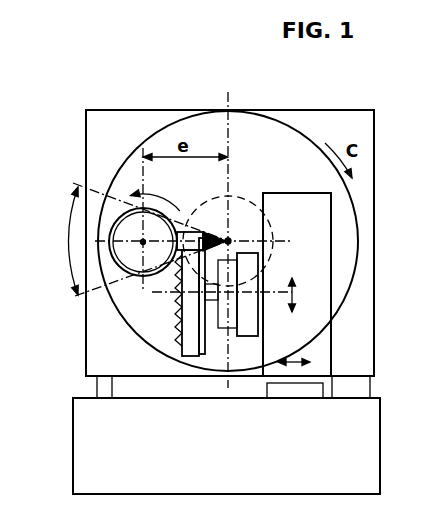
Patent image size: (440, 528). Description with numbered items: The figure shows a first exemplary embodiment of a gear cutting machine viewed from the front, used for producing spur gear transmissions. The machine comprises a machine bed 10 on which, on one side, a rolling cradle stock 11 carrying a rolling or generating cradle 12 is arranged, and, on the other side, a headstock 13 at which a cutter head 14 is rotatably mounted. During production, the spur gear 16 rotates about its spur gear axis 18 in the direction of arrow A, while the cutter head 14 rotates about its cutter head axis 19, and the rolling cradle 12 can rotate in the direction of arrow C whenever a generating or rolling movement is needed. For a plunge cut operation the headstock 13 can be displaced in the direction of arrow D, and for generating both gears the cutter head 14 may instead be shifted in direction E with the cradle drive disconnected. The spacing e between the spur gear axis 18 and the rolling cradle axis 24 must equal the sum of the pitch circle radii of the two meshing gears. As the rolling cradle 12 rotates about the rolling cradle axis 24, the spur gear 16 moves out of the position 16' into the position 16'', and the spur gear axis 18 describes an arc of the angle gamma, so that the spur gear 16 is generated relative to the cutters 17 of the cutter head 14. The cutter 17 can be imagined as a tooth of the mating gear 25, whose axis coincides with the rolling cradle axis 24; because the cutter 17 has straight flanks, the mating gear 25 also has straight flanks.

The machine bed 10 is at (78, 427).
The rolling cradle stock 11 is at (161, 110).
The rolling cradle 12 is at (205, 113).
The headstock 13 is at (291, 382).
The cutter head 14 is at (192, 357).
The spur gear 16 is at (110, 216).
The spur gear position 16' is at (133, 207).
The spur gear position 16'' is at (130, 254).
The cutter 17 is at (178, 325).
The spur gear axis 18 is at (143, 245).
The cutter head axis 19 is at (166, 292).
The rolling cradle axis 24 is at (240, 226).
The mating gear 25 is at (230, 239).